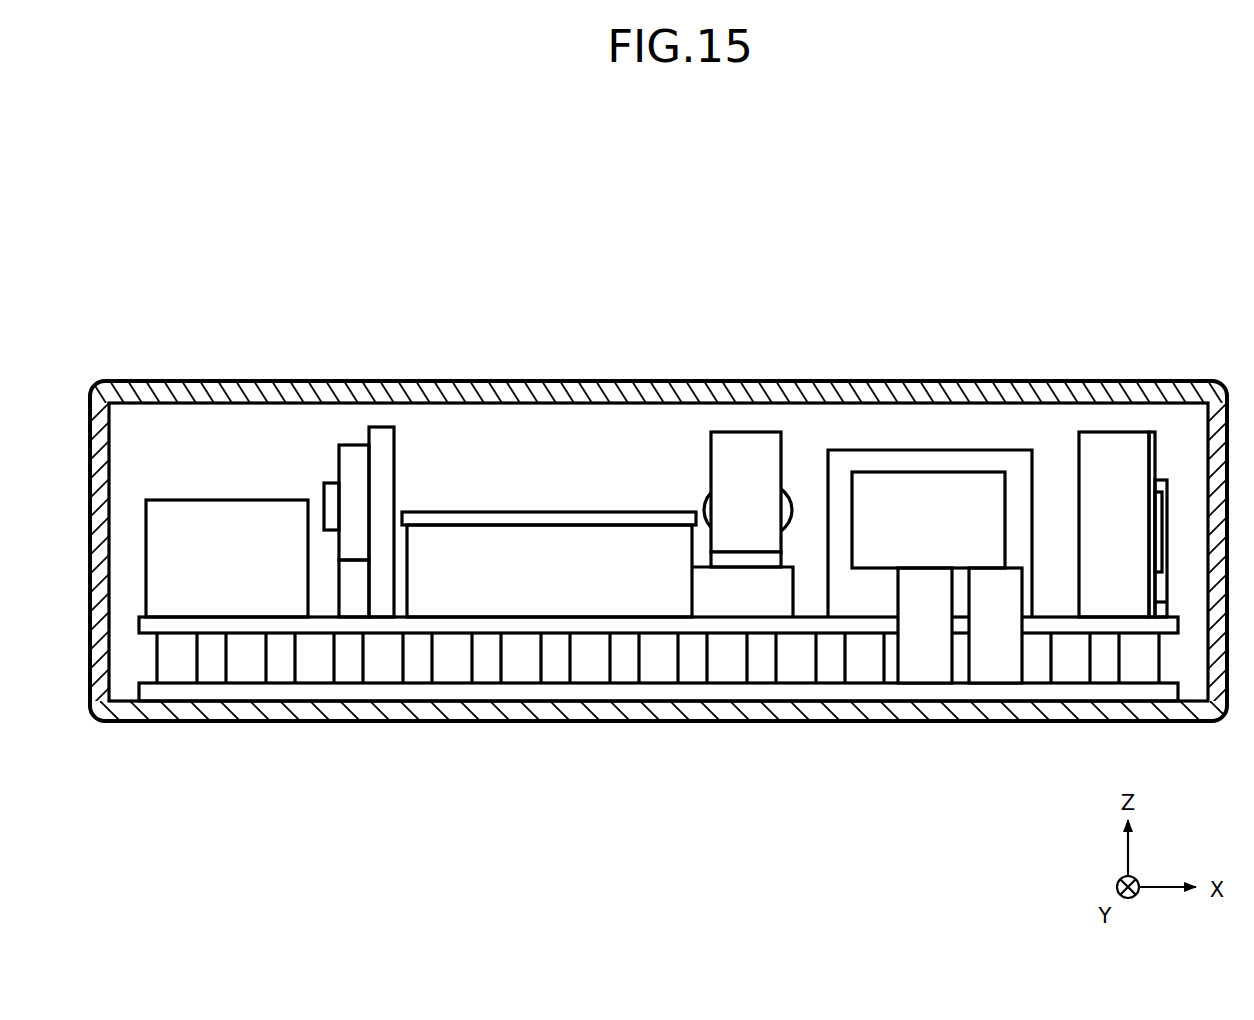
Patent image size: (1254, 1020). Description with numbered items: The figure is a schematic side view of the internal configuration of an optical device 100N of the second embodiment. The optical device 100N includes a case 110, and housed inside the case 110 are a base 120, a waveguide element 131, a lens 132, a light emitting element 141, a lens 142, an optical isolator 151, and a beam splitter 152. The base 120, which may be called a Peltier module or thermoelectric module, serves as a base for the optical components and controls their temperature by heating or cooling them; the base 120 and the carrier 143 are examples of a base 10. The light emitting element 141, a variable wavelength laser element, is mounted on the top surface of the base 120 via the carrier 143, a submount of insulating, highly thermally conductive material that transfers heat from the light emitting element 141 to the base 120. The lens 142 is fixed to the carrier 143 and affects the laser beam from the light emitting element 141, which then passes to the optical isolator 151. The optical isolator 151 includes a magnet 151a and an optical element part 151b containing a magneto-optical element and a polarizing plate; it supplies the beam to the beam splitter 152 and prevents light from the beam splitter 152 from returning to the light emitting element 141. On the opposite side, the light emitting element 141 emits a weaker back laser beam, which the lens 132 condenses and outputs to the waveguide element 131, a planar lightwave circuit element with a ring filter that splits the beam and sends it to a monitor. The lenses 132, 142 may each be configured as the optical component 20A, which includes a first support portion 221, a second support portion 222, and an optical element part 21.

The optical device 100N is at (1090, 199).
The case 110 is at (1197, 381).
The substrate 10 is at (658, 556).
The base 120 is at (418, 703).
The waveguide element 131 is at (185, 497).
The optical component 20A is at (301, 304).
The lens 132 is at (339, 443).
The optical element part 21 is at (330, 508).
The first support portion 221 is at (350, 597).
The second support portion 222 is at (353, 459).
The lens 142 is at (763, 430).
The carrier 143 is at (488, 545).
The light emitting element 141 is at (542, 510).
The optical isolator 151 is at (955, 448).
The magnet 151a is at (1010, 458).
The optical element part 151b is at (888, 470).
The beam splitter 152 is at (1118, 430).